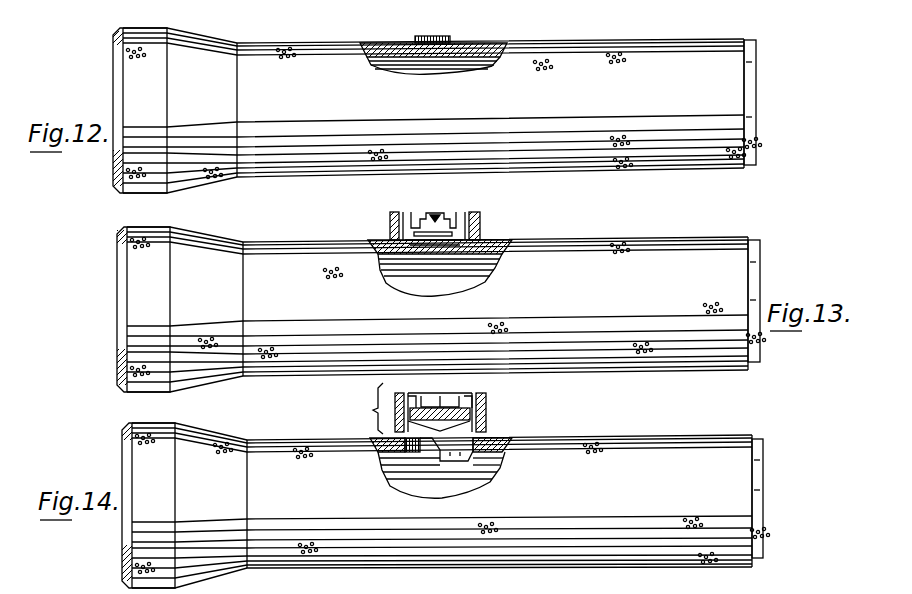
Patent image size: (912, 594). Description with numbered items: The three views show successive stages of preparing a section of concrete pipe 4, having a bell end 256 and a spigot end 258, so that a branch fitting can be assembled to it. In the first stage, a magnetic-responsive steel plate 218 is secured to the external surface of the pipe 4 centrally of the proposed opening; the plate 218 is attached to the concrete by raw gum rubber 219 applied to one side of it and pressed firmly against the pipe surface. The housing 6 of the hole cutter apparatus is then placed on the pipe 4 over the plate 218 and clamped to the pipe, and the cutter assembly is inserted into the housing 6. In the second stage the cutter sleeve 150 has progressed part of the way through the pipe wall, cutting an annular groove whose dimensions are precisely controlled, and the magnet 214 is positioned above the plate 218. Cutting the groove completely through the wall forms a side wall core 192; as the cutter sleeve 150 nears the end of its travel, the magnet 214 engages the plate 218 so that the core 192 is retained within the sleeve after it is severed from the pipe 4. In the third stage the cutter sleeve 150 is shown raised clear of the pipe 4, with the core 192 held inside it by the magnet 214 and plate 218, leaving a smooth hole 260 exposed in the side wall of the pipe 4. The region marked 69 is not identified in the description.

In FIG. 12, the pipe 4 is at (636, 168).
In FIG. 13, the pipe 4 is at (677, 237).
In FIG. 14, the pipe 4 is at (685, 435).
In FIG. 13, the housing 6 is at (484, 219).
In FIG. 14, the housing 6 is at (488, 408).
In FIG. 13, the reinforced wall patch 69 is at (480, 255).
In FIG. 13, the cutter sleeve 150 is at (462, 213).
In FIG. 14, the cutter sleeve 150 is at (467, 399).
In FIG. 13, the side wall core 192 is at (462, 253).
In FIG. 14, the side wall core 192 is at (430, 426).
In FIG. 13, the magnet 214 is at (422, 215).
In FIG. 14, the magnet 214 is at (424, 398).
In FIG. 12, the plate 218 is at (445, 36).
In FIG. 13, the plate 218 is at (440, 249).
In FIG. 14, the plate 218 is at (438, 403).
In FIG. 12, the raw gum rubber 219 is at (413, 42).
In FIG. 12, the bell end 256 is at (186, 189).
In FIG. 13, the bell end 256 is at (132, 303).
In FIG. 14, the bell end 256 is at (145, 455).
In FIG. 12, the spigot end 258 is at (745, 117).
In FIG. 13, the spigot end 258 is at (760, 357).
In FIG. 14, the spigot end 258 is at (762, 558).
In FIG. 14, the hole 260 is at (430, 460).